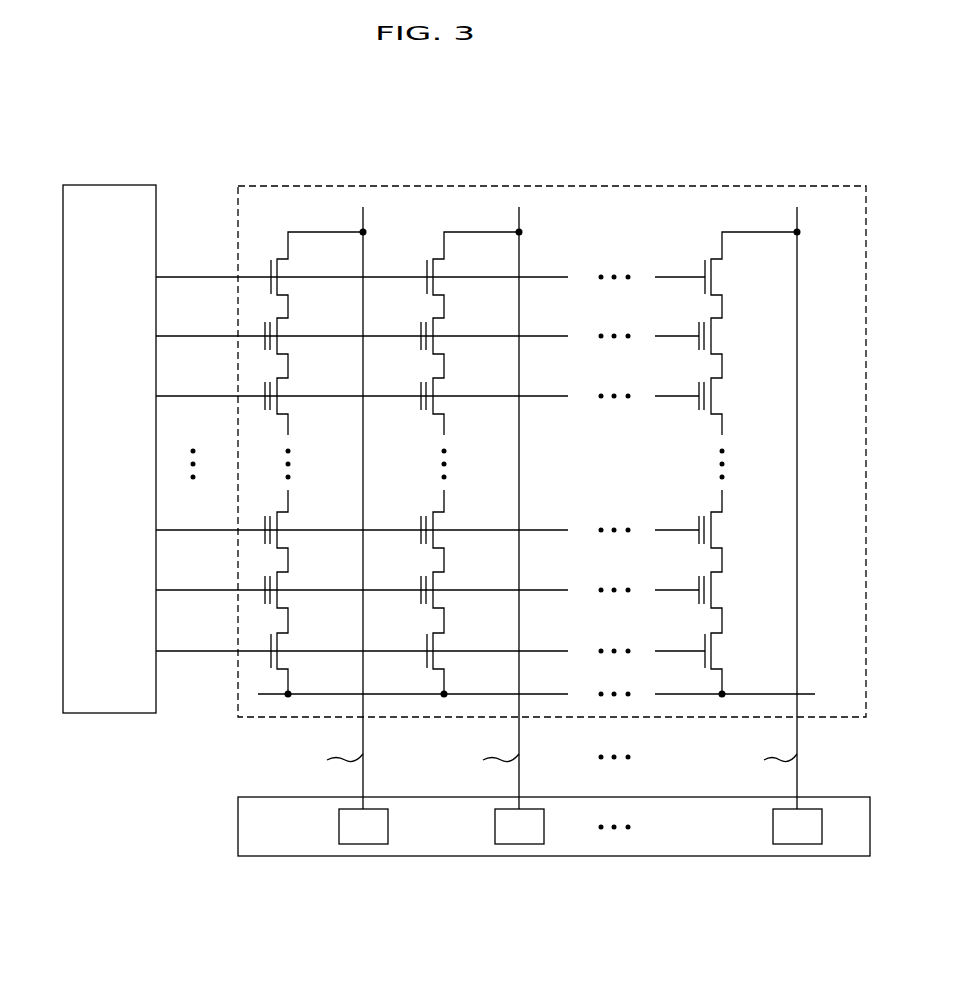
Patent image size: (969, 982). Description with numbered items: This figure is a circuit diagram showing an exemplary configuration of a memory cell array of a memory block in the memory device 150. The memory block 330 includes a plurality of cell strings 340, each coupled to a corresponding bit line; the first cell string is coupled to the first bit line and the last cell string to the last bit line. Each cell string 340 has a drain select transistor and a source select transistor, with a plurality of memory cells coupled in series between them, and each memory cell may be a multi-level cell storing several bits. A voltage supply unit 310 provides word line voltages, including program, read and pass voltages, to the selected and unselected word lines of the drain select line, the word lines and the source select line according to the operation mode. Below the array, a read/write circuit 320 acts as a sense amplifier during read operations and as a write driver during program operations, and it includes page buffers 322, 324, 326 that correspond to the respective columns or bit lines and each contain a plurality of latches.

The memory device 150 is at (812, 93).
The voltage supply unit 310 is at (112, 184).
The read/write circuit 320 is at (238, 826).
The page buffer 322 is at (339, 826).
The page buffer 324 is at (495, 826).
The page buffer 326 is at (773, 826).
The memory block 330 is at (764, 184).
The cell string 340 is at (275, 228).